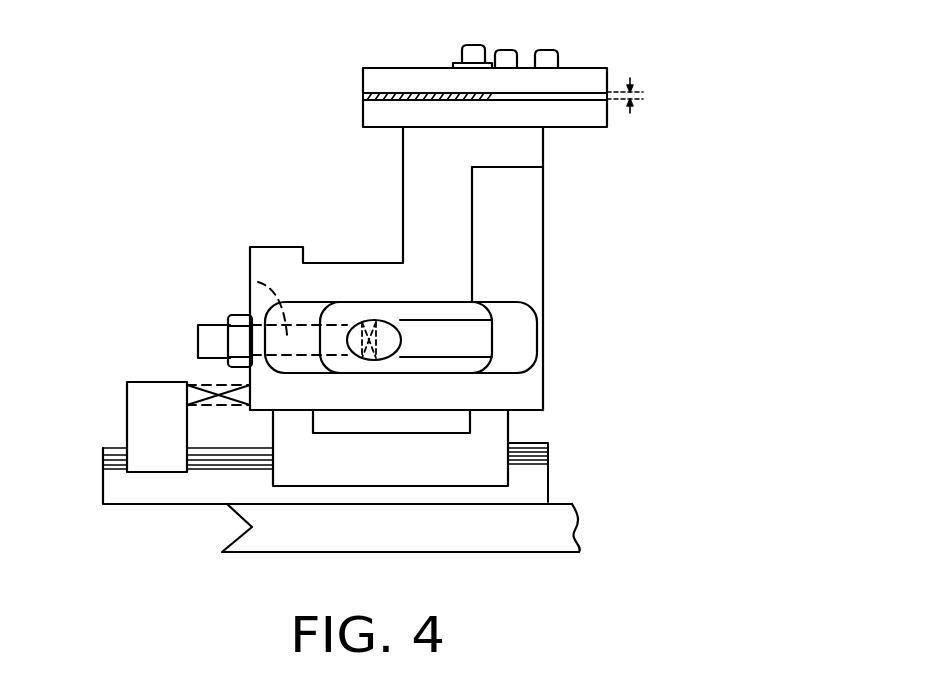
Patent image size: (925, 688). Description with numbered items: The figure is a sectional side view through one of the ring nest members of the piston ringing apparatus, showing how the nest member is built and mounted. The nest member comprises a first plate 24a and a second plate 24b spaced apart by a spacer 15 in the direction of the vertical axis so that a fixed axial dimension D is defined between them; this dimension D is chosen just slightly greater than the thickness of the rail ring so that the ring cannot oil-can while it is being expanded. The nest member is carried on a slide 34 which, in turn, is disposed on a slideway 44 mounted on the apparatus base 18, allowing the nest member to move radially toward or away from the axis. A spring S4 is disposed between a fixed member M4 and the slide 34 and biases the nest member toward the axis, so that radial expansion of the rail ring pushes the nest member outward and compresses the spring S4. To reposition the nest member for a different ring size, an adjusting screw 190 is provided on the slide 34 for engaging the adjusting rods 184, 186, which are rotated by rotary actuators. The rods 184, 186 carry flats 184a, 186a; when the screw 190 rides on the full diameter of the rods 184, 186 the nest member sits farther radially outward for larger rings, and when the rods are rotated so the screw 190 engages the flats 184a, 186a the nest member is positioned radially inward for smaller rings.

The first plate 24a is at (586, 77).
The second plate 24b is at (573, 117).
The spacer 15 is at (363, 99).
The axial dimension D is at (645, 97).
The screw 190 is at (250, 280).
The spring S4 is at (202, 387).
The fixed member M4 is at (137, 425).
The adjusting rod 184 is at (402, 348).
The adjusting rod 186 is at (492, 336).
The flat 184a is at (370, 362).
The flat 186a is at (256, 477).
The slide 34 is at (509, 425).
The slideway 44 is at (541, 480).
The apparatus base 18 is at (528, 538).